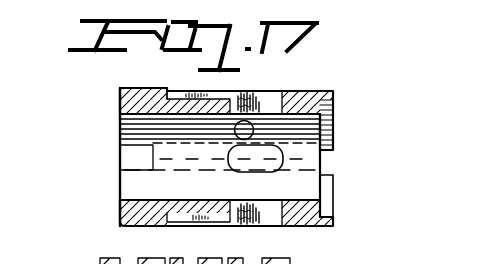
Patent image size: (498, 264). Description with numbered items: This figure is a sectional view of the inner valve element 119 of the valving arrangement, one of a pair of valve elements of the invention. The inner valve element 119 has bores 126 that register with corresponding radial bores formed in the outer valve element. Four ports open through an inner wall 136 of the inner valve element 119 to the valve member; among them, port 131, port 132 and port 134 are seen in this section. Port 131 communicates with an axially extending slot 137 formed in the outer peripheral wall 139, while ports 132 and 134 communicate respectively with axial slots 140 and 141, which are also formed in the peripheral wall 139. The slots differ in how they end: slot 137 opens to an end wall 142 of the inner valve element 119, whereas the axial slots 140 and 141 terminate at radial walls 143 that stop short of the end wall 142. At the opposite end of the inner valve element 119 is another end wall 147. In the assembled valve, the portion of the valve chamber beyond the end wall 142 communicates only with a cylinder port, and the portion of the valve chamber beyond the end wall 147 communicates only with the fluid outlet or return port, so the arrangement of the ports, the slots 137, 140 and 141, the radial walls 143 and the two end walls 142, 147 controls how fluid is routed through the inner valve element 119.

The inner valve element 119 is at (318, 95).
The bores 126 is at (242, 133).
The port 131 is at (247, 171).
The port 132 is at (269, 211).
The port 134 is at (266, 97).
The inner wall 136 is at (133, 200).
The axially extending slot 137 is at (150, 153).
The outer peripheral wall 139 is at (121, 88).
The axial slot 140 is at (185, 219).
The axial slot 141 is at (188, 92).
The end wall 142 is at (120, 104).
The radial walls 143 is at (162, 88).
The end wall 147 is at (334, 203).